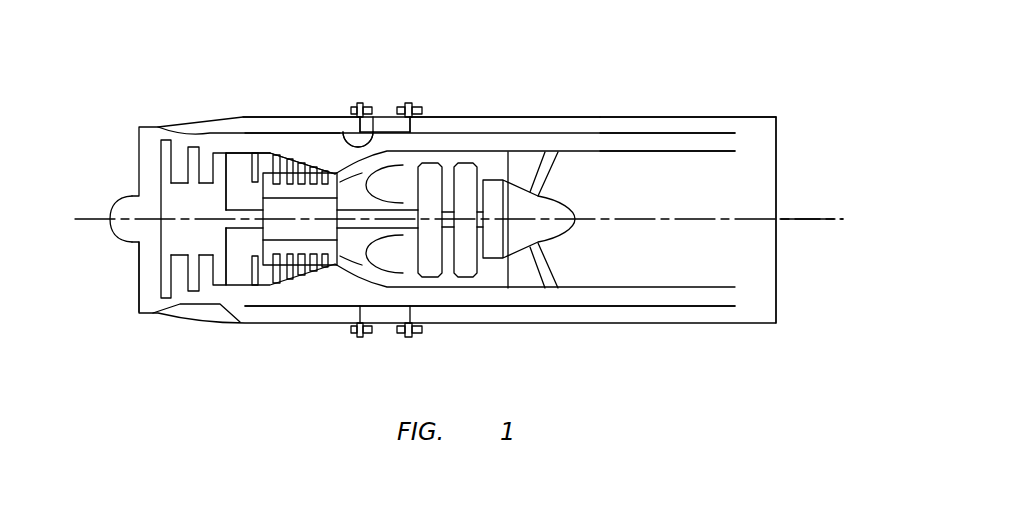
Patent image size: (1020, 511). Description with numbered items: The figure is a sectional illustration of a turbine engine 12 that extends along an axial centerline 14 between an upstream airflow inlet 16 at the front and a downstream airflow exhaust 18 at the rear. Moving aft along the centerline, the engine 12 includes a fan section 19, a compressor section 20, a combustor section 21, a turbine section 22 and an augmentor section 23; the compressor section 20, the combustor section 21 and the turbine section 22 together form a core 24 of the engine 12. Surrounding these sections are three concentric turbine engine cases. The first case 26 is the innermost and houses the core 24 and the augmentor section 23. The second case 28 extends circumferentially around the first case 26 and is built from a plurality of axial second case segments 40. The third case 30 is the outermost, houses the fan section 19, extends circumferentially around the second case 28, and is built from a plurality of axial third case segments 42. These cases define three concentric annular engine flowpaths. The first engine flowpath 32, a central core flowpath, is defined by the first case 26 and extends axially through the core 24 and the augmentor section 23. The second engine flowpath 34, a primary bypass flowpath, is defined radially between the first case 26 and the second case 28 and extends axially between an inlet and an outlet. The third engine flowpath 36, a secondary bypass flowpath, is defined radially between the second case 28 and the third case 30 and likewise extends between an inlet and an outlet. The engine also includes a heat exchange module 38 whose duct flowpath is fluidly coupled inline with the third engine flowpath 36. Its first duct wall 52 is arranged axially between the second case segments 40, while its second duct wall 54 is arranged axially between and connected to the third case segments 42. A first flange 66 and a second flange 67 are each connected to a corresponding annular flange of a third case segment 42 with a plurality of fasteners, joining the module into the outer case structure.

The turbine engine 12 is at (126, 71).
The axial centerline 14 is at (828, 219).
The upstream airflow inlet 16 is at (139, 293).
The downstream airflow exhaust 18 is at (777, 300).
The fan section 19 is at (197, 298).
The compressor section 20 is at (265, 283).
The combustor section 21 is at (392, 264).
The turbine section 22 is at (467, 278).
The augmentor section 23 is at (532, 280).
The core 24 is at (325, 332).
The first case 26 is at (714, 152).
The second case 28 is at (690, 132).
The third case 30 is at (658, 117).
The first engine flowpath 32 is at (245, 178).
The second engine flowpath 34 is at (275, 146).
The third engine flowpath 36 is at (295, 128).
The heat exchange module 38 is at (384, 128).
The second case segment 40 is at (333, 128).
The third case segment 42 is at (305, 117).
The first duct wall 52 is at (346, 134).
The second duct wall 54 is at (393, 124).
The first flange 66 is at (361, 103).
The second flange 67 is at (414, 118).